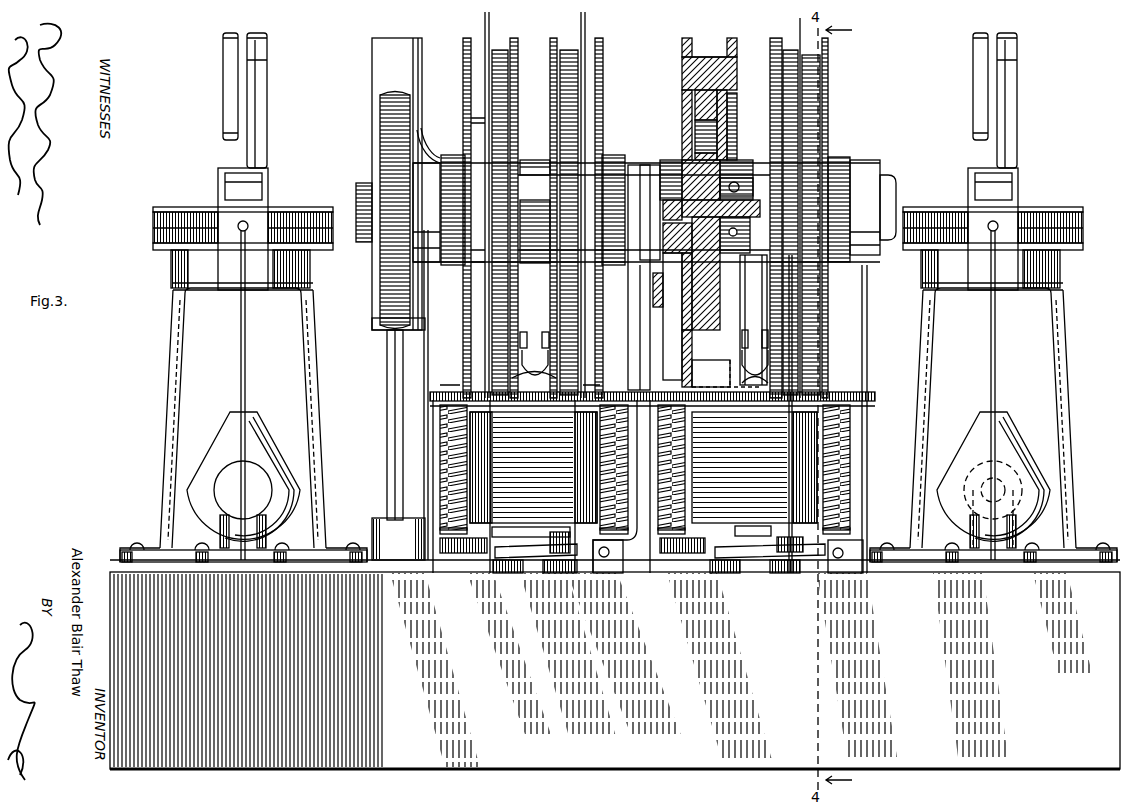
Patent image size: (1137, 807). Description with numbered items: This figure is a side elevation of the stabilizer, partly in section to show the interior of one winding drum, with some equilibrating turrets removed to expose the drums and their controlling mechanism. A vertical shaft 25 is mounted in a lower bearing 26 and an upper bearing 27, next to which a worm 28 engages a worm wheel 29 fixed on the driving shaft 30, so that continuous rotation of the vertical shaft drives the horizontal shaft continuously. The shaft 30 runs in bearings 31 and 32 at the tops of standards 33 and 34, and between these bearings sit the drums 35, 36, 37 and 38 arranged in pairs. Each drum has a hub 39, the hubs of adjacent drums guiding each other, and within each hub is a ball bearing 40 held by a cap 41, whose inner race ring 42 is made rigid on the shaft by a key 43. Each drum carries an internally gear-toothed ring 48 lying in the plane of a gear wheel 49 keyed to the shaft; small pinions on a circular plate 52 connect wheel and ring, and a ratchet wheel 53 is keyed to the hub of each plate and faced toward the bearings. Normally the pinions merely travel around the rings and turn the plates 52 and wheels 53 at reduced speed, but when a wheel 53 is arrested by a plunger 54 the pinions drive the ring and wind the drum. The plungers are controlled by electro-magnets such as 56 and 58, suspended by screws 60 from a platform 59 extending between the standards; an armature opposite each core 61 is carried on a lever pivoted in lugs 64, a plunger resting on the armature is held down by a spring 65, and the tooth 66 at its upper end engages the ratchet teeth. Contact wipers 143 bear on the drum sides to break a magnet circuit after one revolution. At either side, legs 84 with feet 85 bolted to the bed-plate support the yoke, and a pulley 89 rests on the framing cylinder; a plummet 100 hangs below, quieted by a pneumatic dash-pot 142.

The vertical shaft 25 is at (390, 425).
The bearing 26 is at (380, 520).
The bearing 27 is at (386, 72).
The worm 28 is at (364, 182).
The worm wheel 29 is at (425, 145).
The driving shaft 30 is at (905, 190).
The bearing 31 is at (646, 211).
The bearing 32 is at (664, 214).
The standard 33 is at (850, 372).
The standard 34 is at (644, 350).
The drum 35 is at (805, 56).
The drum 36 is at (703, 57).
The drum 37 is at (501, 52).
The drum 38 is at (573, 52).
The hub 39 is at (761, 157).
The ball bearing 40 is at (753, 320).
The cap 41 is at (743, 255).
The inner race ring 42 is at (742, 222).
The key 43 is at (742, 195).
The internally gear-toothed ring 48 is at (700, 92).
The gear wheel 49 is at (724, 162).
The circular plate 52 is at (683, 108).
The ratchet wheel 53 is at (846, 160).
The plunger 54 is at (606, 365).
The electro-magnet 56 is at (746, 524).
The electro-magnet 58 is at (510, 500).
The platform 59 is at (846, 400).
The screw 60 is at (770, 384).
The core 61 is at (736, 530).
The lug 64 is at (845, 553).
The spring 65 is at (618, 556).
The tooth 66 is at (653, 275).
The leg 84 is at (172, 400).
The foot 85 is at (126, 556).
The pulley 89 is at (1070, 240).
The plummet 100 is at (980, 416).
The pneumatic dash-pot 142 is at (990, 476).
The contact wiper 143 is at (767, 335).